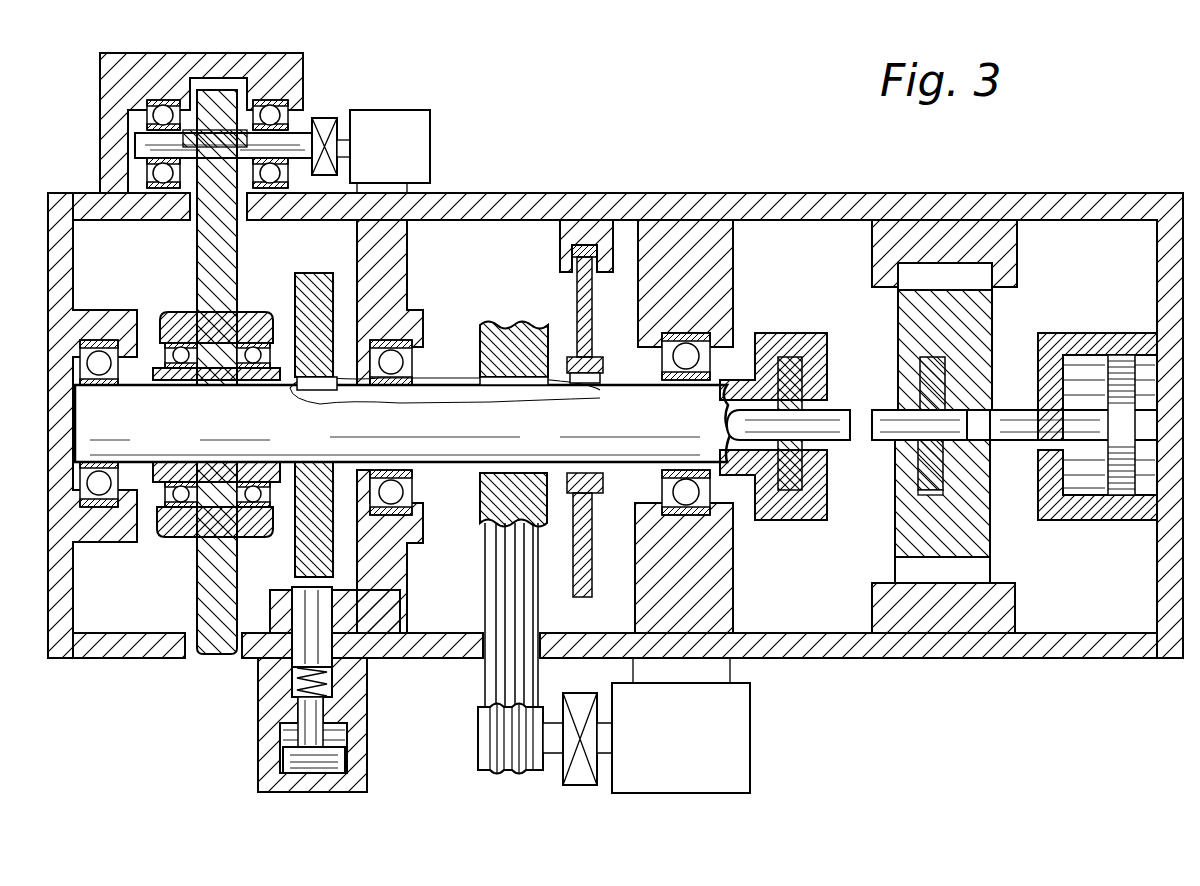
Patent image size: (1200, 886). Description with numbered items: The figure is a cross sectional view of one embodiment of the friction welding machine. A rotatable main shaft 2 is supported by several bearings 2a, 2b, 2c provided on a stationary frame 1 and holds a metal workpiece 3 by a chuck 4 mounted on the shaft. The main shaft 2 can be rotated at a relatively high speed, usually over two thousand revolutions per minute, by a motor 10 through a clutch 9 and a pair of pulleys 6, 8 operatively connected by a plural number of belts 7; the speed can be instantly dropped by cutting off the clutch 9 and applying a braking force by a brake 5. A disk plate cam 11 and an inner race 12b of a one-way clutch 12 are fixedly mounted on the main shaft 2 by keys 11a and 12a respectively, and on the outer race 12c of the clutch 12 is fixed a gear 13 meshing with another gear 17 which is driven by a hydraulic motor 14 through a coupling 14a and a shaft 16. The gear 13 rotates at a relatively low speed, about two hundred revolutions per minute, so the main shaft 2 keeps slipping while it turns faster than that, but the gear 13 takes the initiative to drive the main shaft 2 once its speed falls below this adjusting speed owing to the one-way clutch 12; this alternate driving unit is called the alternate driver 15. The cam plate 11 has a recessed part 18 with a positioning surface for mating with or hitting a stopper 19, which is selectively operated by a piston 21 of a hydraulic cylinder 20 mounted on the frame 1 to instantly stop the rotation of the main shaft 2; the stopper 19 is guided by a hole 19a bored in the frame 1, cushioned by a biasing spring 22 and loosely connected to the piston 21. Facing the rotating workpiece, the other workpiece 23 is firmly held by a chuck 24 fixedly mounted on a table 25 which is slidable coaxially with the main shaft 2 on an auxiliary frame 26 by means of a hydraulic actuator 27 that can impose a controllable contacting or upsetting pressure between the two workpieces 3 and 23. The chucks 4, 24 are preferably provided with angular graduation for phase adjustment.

The stationary frame 1 is at (640, 193).
The main shaft 2 is at (549, 442).
The bearing 2a is at (700, 385).
The bearing 2b is at (412, 365).
The bearing 2c is at (90, 387).
The metal workpiece 3 is at (832, 410).
The chuck 4 is at (808, 372).
The brake 5 is at (577, 293).
The pulley 6 is at (506, 324).
The belts 7 is at (485, 576).
The pulley 8 is at (494, 772).
The clutch 9 is at (570, 787).
The motor 10 is at (750, 733).
The disk plate cam 11 is at (315, 273).
The key 11a is at (315, 393).
The one-way clutch 12 is at (149, 301).
The key 12a is at (205, 395).
The inner race 12b is at (205, 468).
The outer race 12c is at (178, 537).
The gear 13 is at (197, 240).
The hydraulic motor 14 is at (430, 158).
The coupling 14a is at (322, 118).
The alternate driver 15 is at (310, 123).
The shaft 16 is at (300, 118).
The gear 17 is at (232, 110).
The recessed part 18 is at (300, 574).
The stopper 19 is at (333, 625).
The hole 19a is at (327, 695).
The hydraulic cylinder 20 is at (262, 752).
The piston 21 is at (347, 745).
The biasing spring 22 is at (297, 684).
The workpiece 23 is at (890, 440).
The chuck 24 is at (918, 465).
The table 25 is at (993, 305).
The auxiliary frame 26 is at (1020, 240).
The hydraulic actuator 27 is at (1102, 333).